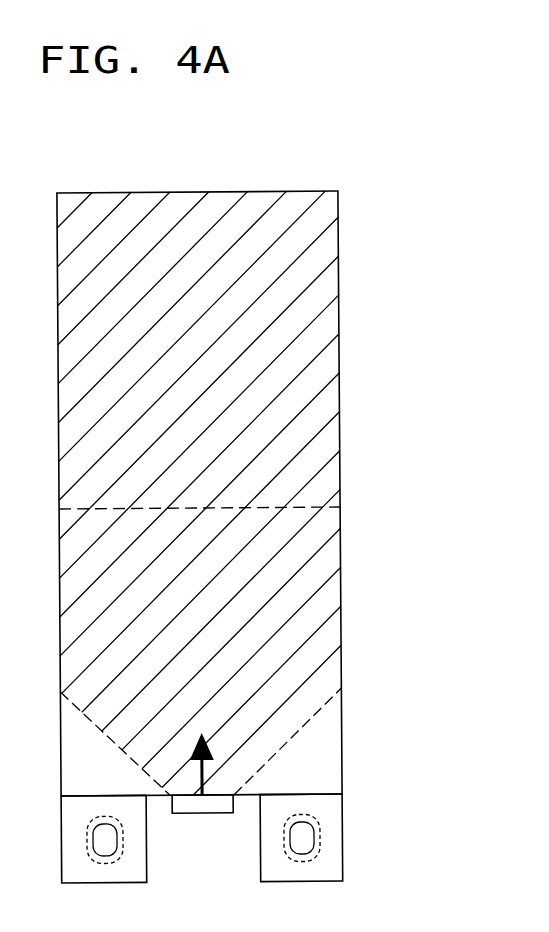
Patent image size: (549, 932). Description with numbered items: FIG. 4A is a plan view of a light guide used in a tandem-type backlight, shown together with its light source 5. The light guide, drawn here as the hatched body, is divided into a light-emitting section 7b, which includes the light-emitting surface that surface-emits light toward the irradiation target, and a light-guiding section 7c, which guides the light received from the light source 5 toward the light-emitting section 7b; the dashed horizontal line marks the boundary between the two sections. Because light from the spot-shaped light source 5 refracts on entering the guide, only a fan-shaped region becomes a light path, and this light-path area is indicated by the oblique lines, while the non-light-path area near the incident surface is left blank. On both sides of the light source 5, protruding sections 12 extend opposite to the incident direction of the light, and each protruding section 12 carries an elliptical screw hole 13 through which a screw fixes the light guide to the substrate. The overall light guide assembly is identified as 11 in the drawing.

The battery cell 11 is at (432, 215).
The light-emitting section 7b is at (71, 354).
The light-guiding section 7c is at (72, 597).
The light source 5 is at (200, 805).
The protruding sections 12 is at (73, 845).
The screw hole 13 is at (104, 848).